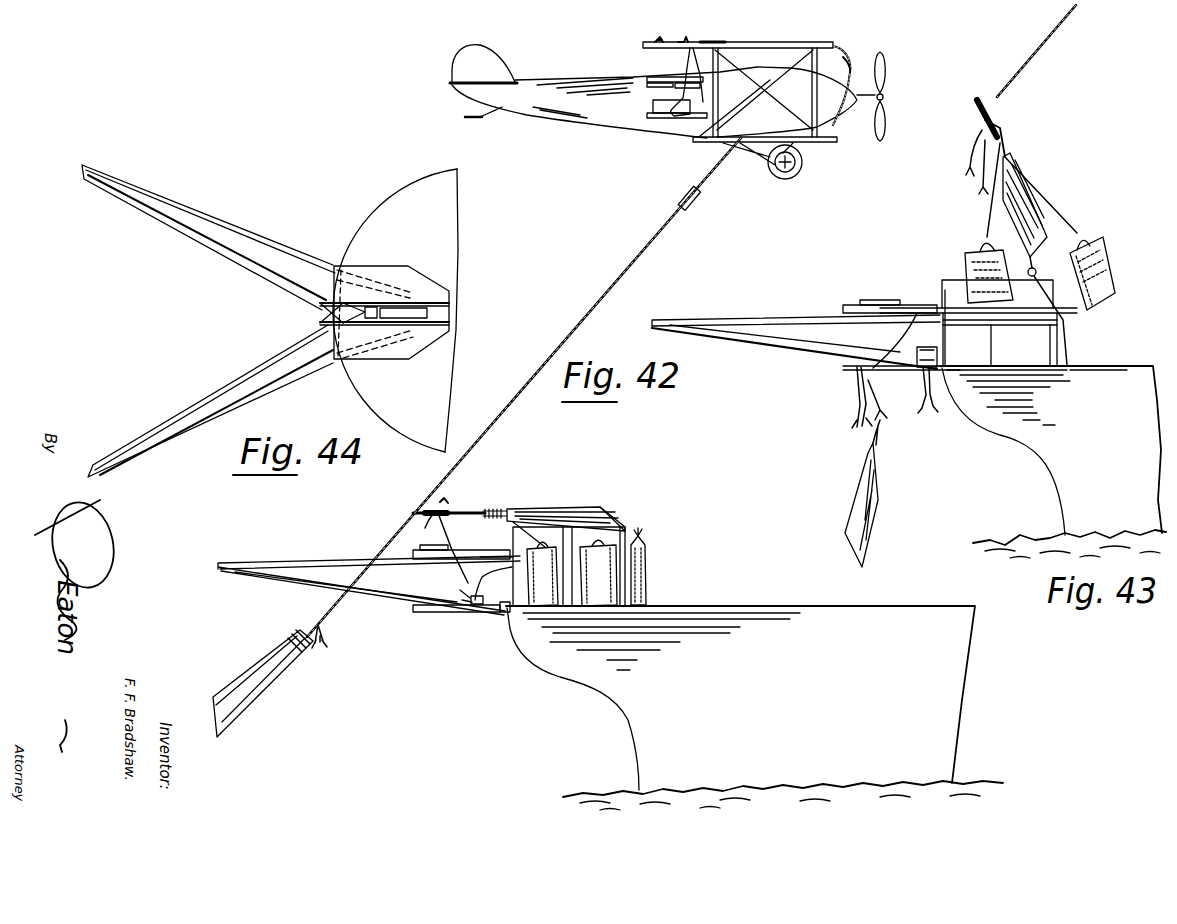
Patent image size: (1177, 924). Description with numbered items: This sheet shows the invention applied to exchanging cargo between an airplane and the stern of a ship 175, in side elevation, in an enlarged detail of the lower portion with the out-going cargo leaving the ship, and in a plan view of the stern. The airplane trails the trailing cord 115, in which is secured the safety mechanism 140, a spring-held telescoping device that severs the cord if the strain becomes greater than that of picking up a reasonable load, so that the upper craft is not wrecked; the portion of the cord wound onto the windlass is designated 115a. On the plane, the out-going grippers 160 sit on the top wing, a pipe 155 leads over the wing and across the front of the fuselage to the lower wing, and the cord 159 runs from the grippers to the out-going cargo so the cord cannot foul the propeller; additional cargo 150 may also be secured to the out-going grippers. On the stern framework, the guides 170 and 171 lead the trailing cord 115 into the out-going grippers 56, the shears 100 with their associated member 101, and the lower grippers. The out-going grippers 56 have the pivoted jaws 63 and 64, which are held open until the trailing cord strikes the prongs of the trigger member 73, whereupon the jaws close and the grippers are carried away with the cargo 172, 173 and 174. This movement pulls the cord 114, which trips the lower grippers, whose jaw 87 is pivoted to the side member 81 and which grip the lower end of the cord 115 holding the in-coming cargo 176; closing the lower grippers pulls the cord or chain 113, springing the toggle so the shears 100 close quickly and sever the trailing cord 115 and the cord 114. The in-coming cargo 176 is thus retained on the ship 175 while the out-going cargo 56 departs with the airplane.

In FIG. 42, the out-going grippers 56 is at (545, 507).
In FIG. 43, the out-going grippers 56 is at (1033, 207).
In FIG. 42, the jaw 63 is at (653, 48).
In FIG. 43, the jaw 63 is at (980, 135).
In FIG. 44, the jaw 63 is at (320, 328).
In FIG. 42, the jaw 64 is at (712, 42).
In FIG. 43, the jaw 64 is at (999, 130).
In FIG. 44, the jaw 64 is at (327, 310).
In FIG. 42, the trigger member 73 is at (684, 39).
In FIG. 43, the trigger member 73 is at (999, 112).
In FIG. 42, the side member 81 is at (653, 105).
In FIG. 42, the jaw 87 is at (440, 605).
In FIG. 42, the shears 100 is at (667, 77).
In FIG. 43, the shears 100 is at (843, 310).
In FIG. 42, the bar 101 is at (660, 85).
In FIG. 43, the bar 101 is at (863, 301).
In FIG. 42, the cord 113 is at (482, 576).
In FIG. 43, the cord 113 is at (893, 338).
In FIG. 42, the cord 114 is at (440, 533).
In FIG. 43, the cord 114 is at (978, 177).
In FIG. 42, the trailing cord 115 is at (596, 300).
In FIG. 43, the trailing cord 115 is at (1009, 96).
In FIG. 42, the cord portion 115a is at (714, 173).
In FIG. 42, the safety mechanism 140 is at (690, 204).
In FIG. 42, the additional cargo 150 is at (657, 118).
In FIG. 42, the pipe 155 is at (850, 51).
In FIG. 42, the cord 159 is at (798, 42).
In FIG. 42, the out-going grippers 160 is at (659, 41).
In FIG. 44, the guide 170 is at (190, 237).
In FIG. 42, the guide 171 is at (320, 586).
In FIG. 43, the guide 171 is at (832, 326).
In FIG. 44, the guide 171 is at (125, 443).
In FIG. 42, the cargo 172 is at (542, 597).
In FIG. 43, the cargo 172 is at (973, 273).
In FIG. 42, the cargo 173 is at (622, 532).
In FIG. 42, the cargo 174 is at (643, 583).
In FIG. 43, the cargo 174 is at (1098, 282).
In FIG. 42, the ship 175 is at (754, 708).
In FIG. 43, the ship 175 is at (1053, 462).
In FIG. 43, the in-coming cargo 176 is at (862, 491).